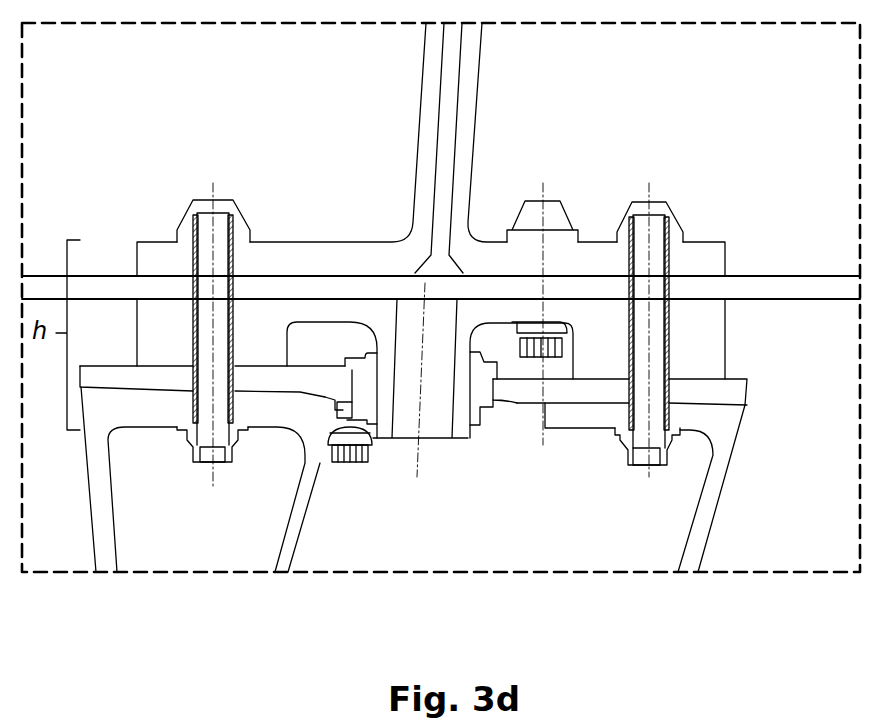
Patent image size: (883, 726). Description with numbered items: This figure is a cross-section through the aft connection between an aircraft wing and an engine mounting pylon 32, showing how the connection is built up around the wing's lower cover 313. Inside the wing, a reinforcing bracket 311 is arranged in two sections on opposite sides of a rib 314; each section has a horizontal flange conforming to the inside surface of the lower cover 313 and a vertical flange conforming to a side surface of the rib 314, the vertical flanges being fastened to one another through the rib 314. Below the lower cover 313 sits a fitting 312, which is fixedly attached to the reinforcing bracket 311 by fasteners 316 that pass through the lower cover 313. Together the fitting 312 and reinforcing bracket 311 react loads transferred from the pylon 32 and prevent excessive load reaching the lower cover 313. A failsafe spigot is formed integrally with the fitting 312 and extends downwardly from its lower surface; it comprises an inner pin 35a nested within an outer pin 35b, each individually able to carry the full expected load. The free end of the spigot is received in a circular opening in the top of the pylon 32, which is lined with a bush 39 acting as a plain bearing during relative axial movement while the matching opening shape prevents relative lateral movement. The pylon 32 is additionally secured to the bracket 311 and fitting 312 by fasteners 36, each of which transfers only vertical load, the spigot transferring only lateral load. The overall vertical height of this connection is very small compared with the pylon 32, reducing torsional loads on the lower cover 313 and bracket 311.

The reinforcing bracket 311 is at (426, 160).
The rib 314 is at (444, 132).
The lower cover 313 is at (777, 288).
The fasteners 316 is at (547, 343).
The fasteners 36 is at (207, 343).
The inner pin 35a is at (437, 402).
The outer pin 35b is at (382, 402).
The bush 39 is at (482, 405).
The fitting 312 is at (592, 347).
The engine mounting pylon 32 is at (717, 468).